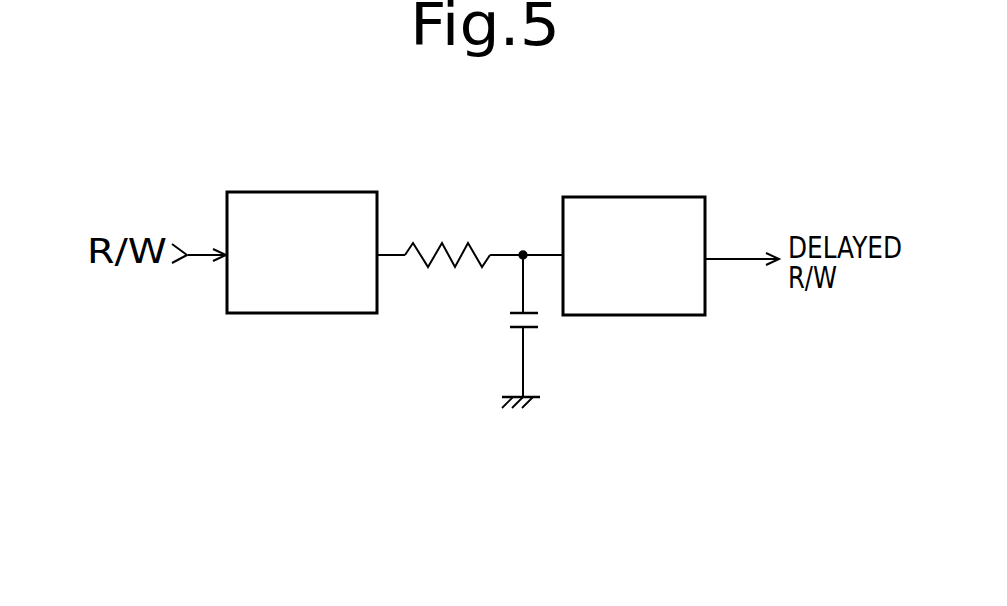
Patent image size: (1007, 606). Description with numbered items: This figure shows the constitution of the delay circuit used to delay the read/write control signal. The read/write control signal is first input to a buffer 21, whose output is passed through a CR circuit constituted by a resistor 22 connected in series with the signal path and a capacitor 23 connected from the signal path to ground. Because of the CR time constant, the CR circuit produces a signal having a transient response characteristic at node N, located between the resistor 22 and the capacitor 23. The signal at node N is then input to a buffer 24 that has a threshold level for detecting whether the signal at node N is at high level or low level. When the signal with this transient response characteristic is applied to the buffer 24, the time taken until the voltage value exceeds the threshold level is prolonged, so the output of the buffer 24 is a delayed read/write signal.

The buffer 21 is at (310, 192).
The resistor 22 is at (442, 243).
The capacitor 23 is at (523, 358).
The buffer 24 is at (643, 197).
The node N is at (523, 252).